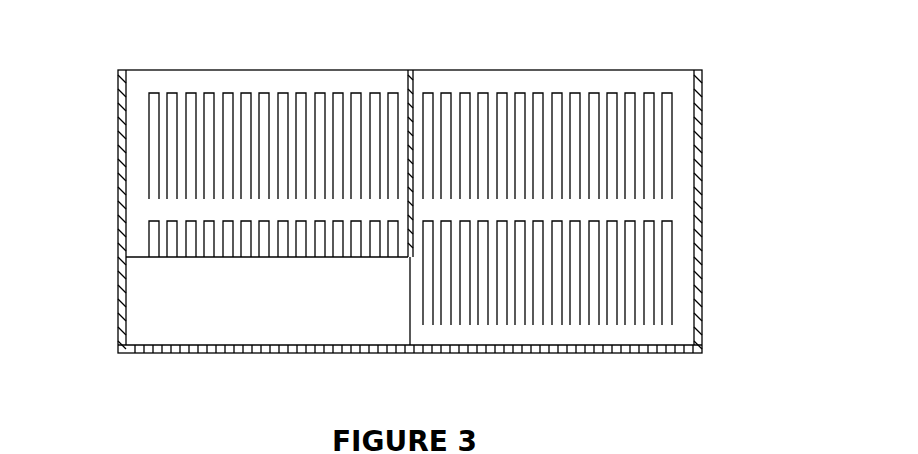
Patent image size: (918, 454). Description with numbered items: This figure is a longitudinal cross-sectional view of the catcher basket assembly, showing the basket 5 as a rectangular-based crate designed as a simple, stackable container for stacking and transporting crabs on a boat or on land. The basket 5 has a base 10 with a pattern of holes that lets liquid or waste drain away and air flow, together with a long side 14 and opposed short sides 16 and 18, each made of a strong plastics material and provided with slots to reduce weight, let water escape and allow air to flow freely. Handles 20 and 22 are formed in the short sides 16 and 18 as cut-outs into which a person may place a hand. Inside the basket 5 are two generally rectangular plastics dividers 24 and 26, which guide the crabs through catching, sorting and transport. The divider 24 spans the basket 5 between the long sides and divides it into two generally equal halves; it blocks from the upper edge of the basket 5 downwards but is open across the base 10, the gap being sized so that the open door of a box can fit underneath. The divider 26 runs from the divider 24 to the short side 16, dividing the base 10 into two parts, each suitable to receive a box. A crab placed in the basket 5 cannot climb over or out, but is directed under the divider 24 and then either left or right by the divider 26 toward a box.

The basket 5 is at (135, 70).
The base 10 is at (180, 350).
The long side 14 is at (593, 88).
The short side 16 is at (124, 203).
The short side 18 is at (700, 200).
The handle 20 is at (123, 120).
The handle 22 is at (698, 108).
The divider 24 is at (411, 95).
The divider 26 is at (135, 297).